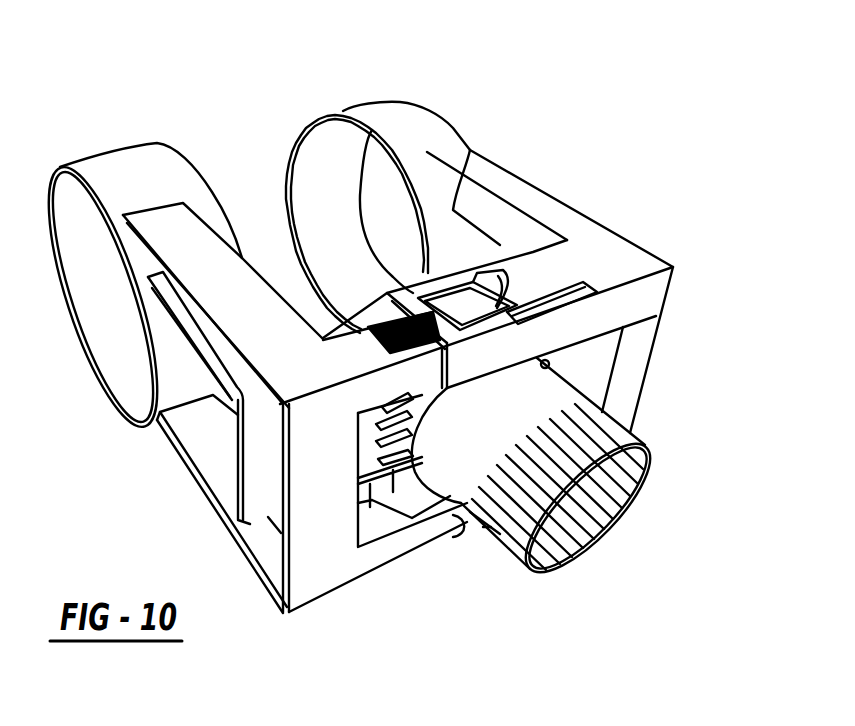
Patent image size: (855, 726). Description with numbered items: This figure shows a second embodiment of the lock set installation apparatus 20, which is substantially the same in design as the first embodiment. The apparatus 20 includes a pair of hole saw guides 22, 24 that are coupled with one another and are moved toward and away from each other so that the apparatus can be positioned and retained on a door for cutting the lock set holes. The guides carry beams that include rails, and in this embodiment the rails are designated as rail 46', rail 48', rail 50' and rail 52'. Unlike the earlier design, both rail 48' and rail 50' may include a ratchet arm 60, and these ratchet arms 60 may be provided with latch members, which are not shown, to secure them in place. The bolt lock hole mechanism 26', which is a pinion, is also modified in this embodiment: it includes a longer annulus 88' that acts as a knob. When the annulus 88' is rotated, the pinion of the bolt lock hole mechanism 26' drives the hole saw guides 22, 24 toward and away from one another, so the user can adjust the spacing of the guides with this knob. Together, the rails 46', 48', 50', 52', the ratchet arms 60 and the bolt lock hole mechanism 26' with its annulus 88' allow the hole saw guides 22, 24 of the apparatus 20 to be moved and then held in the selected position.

The lock set installation apparatus 20 is at (456, 108).
The hole saw guide 22 is at (157, 445).
The hole saw guide 24 is at (440, 400).
The bolt lock hole mechanism 26' is at (550, 496).
The rail 46' is at (299, 463).
The rail 48' is at (378, 536).
The rail 50' is at (555, 335).
The rail 52' is at (454, 568).
The ratchet arm 60 is at (488, 285).
The annulus 88' is at (496, 592).